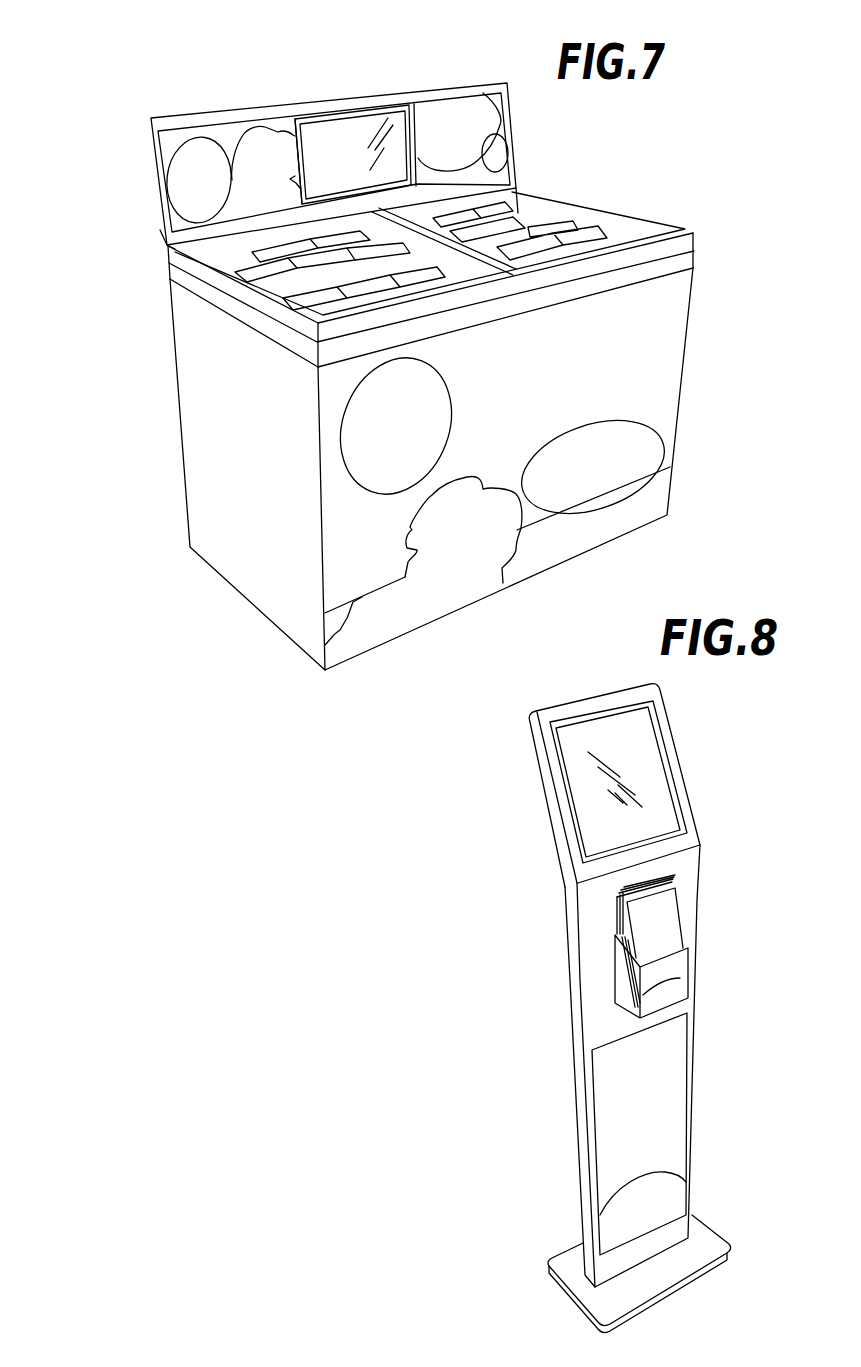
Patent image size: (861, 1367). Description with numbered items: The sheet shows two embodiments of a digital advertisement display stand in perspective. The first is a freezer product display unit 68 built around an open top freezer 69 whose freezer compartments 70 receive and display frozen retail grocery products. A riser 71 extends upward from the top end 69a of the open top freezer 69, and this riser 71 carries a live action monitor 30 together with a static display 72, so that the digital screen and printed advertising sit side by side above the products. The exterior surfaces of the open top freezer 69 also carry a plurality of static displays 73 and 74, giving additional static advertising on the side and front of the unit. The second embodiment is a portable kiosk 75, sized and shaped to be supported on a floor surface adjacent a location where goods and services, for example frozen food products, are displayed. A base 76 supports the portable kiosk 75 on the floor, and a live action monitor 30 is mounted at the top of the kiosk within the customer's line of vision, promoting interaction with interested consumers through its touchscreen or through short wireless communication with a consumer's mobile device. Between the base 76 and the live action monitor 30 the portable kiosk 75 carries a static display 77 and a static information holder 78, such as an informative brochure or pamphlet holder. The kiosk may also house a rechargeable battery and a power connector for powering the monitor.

In FIG. 7, the live action monitor 30 is at (377, 108).
In FIG. 8, the live action monitor 30 is at (643, 772).
In FIG. 7, the freezer product display unit 68 is at (140, 122).
In FIG. 7, the open top freezer 69 is at (686, 371).
In FIG. 7, the top end 69a is at (167, 246).
In FIG. 7, the freezer compartments 70 is at (606, 230).
In FIG. 7, the riser 71 is at (452, 268).
In FIG. 7, the static display 72 is at (193, 182).
In FIG. 7, the static display 73 is at (263, 485).
In FIG. 7, the static display 74 is at (547, 398).
In FIG. 8, the portable kiosk 75 is at (713, 730).
In FIG. 8, the base 76 is at (688, 1288).
In FIG. 8, the static display 77 is at (667, 1105).
In FIG. 8, the static information holder 78 is at (690, 968).